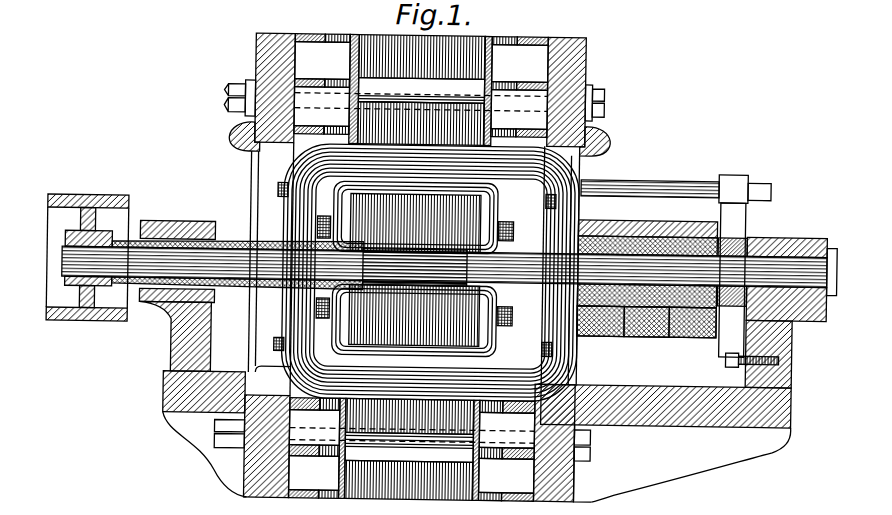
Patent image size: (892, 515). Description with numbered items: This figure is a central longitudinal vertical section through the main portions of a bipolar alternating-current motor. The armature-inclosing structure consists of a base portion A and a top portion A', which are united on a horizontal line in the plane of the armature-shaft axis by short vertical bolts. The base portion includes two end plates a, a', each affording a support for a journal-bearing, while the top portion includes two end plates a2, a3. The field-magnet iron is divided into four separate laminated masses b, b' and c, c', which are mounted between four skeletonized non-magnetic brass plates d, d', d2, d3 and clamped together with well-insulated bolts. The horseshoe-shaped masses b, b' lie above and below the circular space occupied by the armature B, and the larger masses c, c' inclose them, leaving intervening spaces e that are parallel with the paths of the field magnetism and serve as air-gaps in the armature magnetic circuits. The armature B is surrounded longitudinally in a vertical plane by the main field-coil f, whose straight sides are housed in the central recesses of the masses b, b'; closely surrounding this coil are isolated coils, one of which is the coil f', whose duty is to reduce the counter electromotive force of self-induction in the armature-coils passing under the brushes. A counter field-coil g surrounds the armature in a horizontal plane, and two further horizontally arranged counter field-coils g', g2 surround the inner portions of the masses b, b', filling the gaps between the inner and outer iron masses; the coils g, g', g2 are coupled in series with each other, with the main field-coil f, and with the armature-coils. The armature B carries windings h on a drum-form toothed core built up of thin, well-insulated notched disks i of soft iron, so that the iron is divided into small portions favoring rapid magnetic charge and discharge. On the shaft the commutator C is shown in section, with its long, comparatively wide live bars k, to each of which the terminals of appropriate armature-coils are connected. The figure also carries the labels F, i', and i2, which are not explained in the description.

The top portion A' is at (257, 210).
The end plate a3 is at (253, 62).
The end plate a2 is at (583, 62).
The non-magnetic plate d3 is at (421, 90).
The non-magnetic plate d2 is at (516, 91).
The field-magnet iron mass c is at (422, 57).
The intervening space e is at (415, 270).
The field-magnet iron mass b is at (421, 124).
The isolated coil f' is at (430, 271).
The armature winding F is at (430, 271).
The main field-coil f is at (430, 267).
The armature windings h is at (415, 268).
The armature B is at (415, 251).
The notched disk i is at (487, 274).
The armature core lower / bearing brass i' is at (509, 320).
The bearing brass i2 is at (693, 332).
The counter field-coil g' is at (415, 187).
The counter field-coil g is at (411, 271).
The counter field-coil g2 is at (410, 359).
The commutator C is at (441, 280).
The live bar k is at (723, 271).
The base portion A is at (476, 443).
The end plate a' is at (266, 432).
The end plate a is at (554, 443).
The non-magnetic plate d' is at (411, 450).
The non-magnetic plate d is at (503, 450).
The field-magnet iron mass b' is at (409, 416).
The field-magnet iron mass c' is at (408, 480).